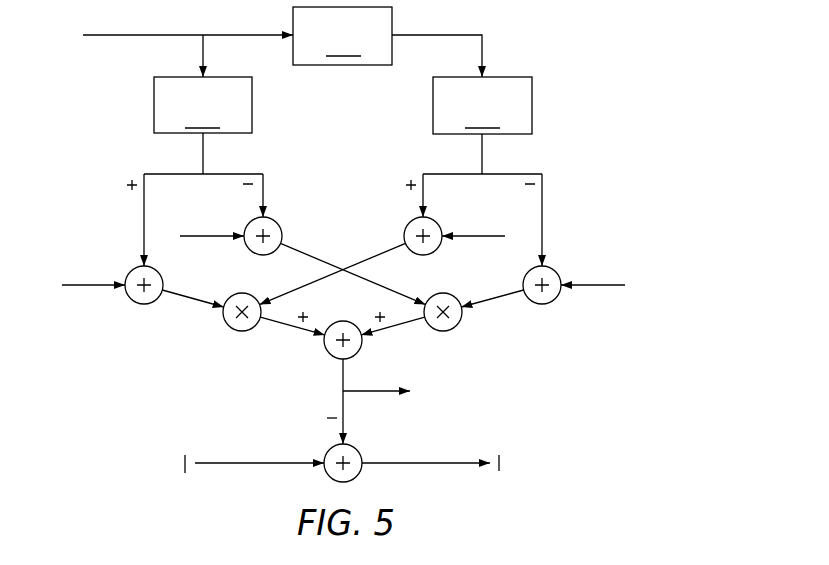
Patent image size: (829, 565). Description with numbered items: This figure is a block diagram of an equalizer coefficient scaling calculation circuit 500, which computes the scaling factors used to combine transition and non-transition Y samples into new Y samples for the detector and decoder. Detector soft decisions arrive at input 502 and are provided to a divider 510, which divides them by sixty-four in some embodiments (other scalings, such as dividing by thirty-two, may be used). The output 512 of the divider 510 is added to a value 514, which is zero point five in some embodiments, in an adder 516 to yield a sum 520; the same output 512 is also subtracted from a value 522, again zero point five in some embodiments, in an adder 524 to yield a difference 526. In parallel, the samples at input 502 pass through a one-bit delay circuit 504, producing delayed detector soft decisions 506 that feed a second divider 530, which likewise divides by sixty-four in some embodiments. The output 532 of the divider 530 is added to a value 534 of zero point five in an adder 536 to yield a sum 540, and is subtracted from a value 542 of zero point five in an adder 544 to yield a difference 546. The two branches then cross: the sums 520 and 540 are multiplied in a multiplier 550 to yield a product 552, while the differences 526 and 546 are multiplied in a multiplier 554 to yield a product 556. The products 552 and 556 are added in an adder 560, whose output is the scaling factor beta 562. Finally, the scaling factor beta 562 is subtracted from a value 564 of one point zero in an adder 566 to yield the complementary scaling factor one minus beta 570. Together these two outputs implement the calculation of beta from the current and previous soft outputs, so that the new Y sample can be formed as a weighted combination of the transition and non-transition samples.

The equalizer coefficient scaling calculation circuit 500 is at (638, 78).
The input 502 is at (117, 37).
The one-bit delay circuit 504 is at (342, 36).
The delayed detector soft decisions 506 is at (483, 40).
The divider 510 is at (203, 105).
The output of divider 512 is at (203, 153).
The value 514 is at (83, 285).
The adder 516 is at (131, 298).
The sum 520 is at (186, 296).
The value 522 is at (200, 236).
The adder 524 is at (250, 250).
The difference 526 is at (318, 261).
The divider 530 is at (482, 105).
The output of divider 532 is at (483, 153).
The value 534 is at (486, 236).
The adder 536 is at (437, 250).
The sum 540 is at (368, 260).
The value 542 is at (603, 285).
The adder 544 is at (556, 298).
The difference 546 is at (500, 297).
The multiplier 550 is at (230, 325).
The product 552 is at (287, 324).
The multiplier 554 is at (456, 325).
The product 556 is at (400, 324).
The adder 560 is at (330, 354).
The scaling factor beta 562 is at (375, 392).
The value 564 is at (220, 464).
The adder 566 is at (330, 450).
The scaling factor (1-beta) 570 is at (448, 464).